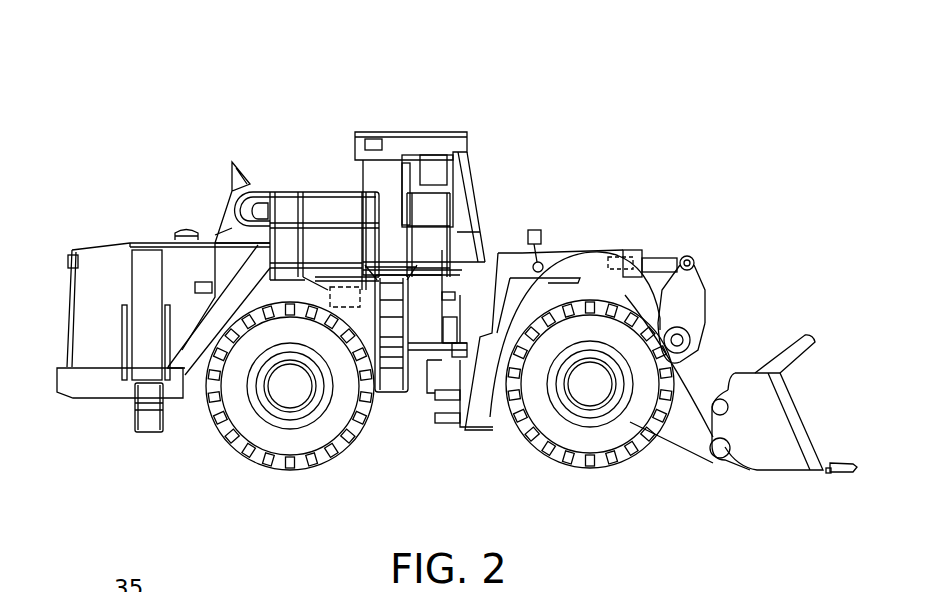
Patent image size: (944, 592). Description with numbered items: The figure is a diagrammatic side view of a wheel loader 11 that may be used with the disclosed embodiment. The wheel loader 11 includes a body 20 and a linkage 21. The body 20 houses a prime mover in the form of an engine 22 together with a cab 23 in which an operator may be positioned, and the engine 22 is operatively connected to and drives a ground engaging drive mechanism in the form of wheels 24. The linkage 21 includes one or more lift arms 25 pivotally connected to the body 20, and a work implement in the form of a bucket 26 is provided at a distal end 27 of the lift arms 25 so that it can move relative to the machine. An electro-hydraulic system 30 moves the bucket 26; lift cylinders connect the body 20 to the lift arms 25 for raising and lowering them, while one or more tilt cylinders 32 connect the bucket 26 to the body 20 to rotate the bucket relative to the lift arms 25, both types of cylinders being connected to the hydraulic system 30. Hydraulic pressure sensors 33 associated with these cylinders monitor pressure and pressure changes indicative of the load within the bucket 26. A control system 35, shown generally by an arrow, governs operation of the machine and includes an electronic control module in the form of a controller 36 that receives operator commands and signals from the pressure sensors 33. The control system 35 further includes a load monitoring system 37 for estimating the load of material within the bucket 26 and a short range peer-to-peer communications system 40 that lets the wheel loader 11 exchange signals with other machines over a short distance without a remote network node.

The wheel loader 11 is at (578, 103).
The body 20 is at (183, 385).
The linkage 21 is at (603, 228).
The engine 22 is at (185, 265).
The cab 23 is at (412, 132).
The wheels 24 is at (515, 430).
The lift arms 25 is at (682, 400).
The bucket 26 is at (807, 420).
The distal end 27 is at (693, 432).
The electro-hydraulic system 30 is at (520, 193).
The tilt cylinders 32 is at (612, 250).
The hydraulic pressure sensors 33 is at (632, 252).
The control system 35 is at (263, 113).
The controller 36 is at (350, 287).
The load monitoring system 37 is at (578, 180).
The peer-to-peer communications system 40 is at (203, 107).